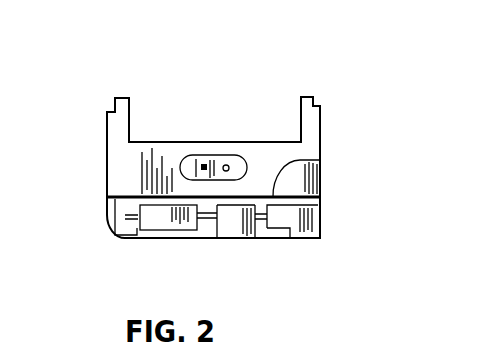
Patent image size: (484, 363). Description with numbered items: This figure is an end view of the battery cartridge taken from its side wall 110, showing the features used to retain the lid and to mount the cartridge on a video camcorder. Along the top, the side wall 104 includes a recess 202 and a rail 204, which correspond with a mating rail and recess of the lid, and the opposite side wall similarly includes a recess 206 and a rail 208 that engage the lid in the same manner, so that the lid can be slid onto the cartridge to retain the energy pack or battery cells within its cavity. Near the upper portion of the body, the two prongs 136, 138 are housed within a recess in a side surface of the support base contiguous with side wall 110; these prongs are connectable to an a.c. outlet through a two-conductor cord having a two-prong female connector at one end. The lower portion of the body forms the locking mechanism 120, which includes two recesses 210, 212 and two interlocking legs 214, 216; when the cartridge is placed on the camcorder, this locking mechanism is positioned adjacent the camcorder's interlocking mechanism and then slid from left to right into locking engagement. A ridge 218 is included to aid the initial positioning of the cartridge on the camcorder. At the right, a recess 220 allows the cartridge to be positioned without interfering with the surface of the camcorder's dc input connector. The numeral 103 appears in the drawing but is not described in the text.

The left side wall 103 is at (106, 152).
The side wall 104 is at (321, 143).
The side wall 110 is at (126, 170).
The locking mechanism 120 is at (354, 254).
The prong 136 is at (203, 164).
The prong 138 is at (227, 165).
The recess 202 is at (323, 105).
The rail 204 is at (316, 100).
The recess 206 is at (111, 108).
The rail 208 is at (112, 95).
The recess 210 is at (180, 242).
The recess 212 is at (307, 242).
The interlocking leg 214 is at (128, 242).
The interlocking leg 216 is at (282, 242).
The ridge 218 is at (213, 242).
The recess 220 is at (297, 185).